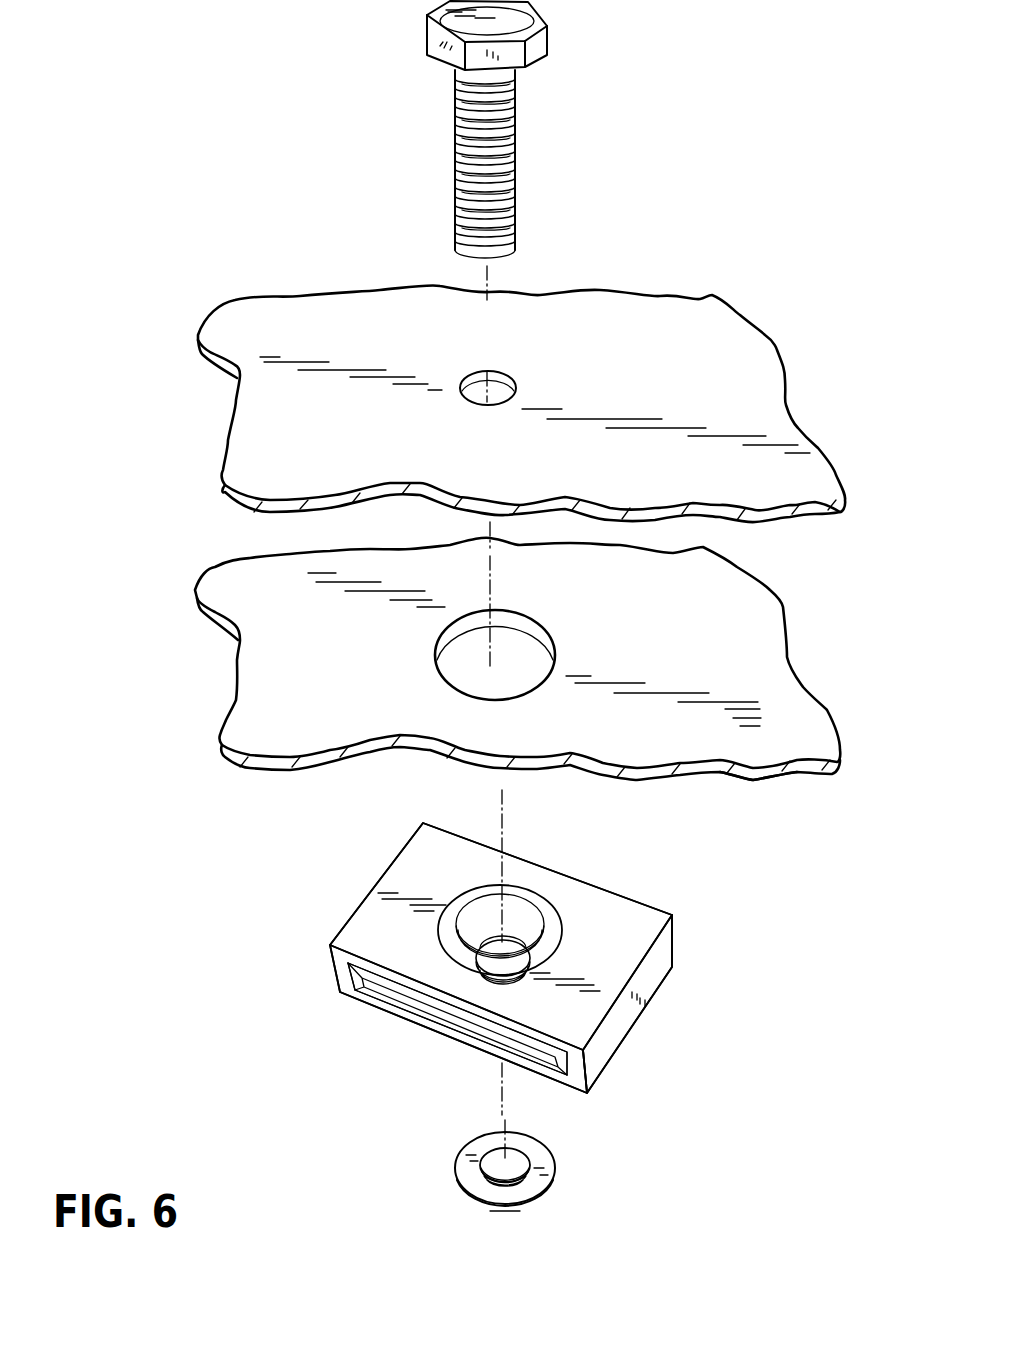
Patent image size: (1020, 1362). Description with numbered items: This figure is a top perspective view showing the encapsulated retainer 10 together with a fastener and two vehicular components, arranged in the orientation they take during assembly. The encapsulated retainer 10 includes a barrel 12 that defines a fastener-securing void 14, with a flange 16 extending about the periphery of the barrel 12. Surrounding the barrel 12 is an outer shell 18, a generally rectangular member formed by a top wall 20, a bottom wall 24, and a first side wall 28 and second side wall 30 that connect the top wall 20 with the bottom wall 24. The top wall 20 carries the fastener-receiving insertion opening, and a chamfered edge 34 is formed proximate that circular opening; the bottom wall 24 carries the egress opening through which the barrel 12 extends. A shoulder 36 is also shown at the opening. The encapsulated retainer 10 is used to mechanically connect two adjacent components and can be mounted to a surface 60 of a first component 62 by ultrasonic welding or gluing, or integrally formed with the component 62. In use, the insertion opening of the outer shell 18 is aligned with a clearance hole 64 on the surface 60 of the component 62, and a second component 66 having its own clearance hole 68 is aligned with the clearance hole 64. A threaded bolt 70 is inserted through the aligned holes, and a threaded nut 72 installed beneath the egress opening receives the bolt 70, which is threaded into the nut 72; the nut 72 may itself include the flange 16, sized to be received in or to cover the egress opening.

The encapsulated retainer 10 is at (699, 932).
The barrel 12 is at (512, 970).
The fastener-securing void 14 is at (515, 950).
The flange 16 is at (382, 990).
The outer shell 18 is at (386, 865).
The top wall 20 is at (445, 855).
The bottom wall 24 is at (478, 1050).
The first side wall 28 is at (330, 968).
The second side wall 30 is at (615, 1035).
The chamfered edge 34 is at (488, 897).
The annular shoulder 36 is at (513, 898).
The surface 60 is at (801, 803).
The component 62 is at (790, 603).
The clearance hole 64 is at (468, 657).
The second component 66 is at (714, 288).
The clearance hole 68 is at (498, 395).
The threaded bolt 70 is at (533, 40).
The threaded nut 72 is at (533, 1189).